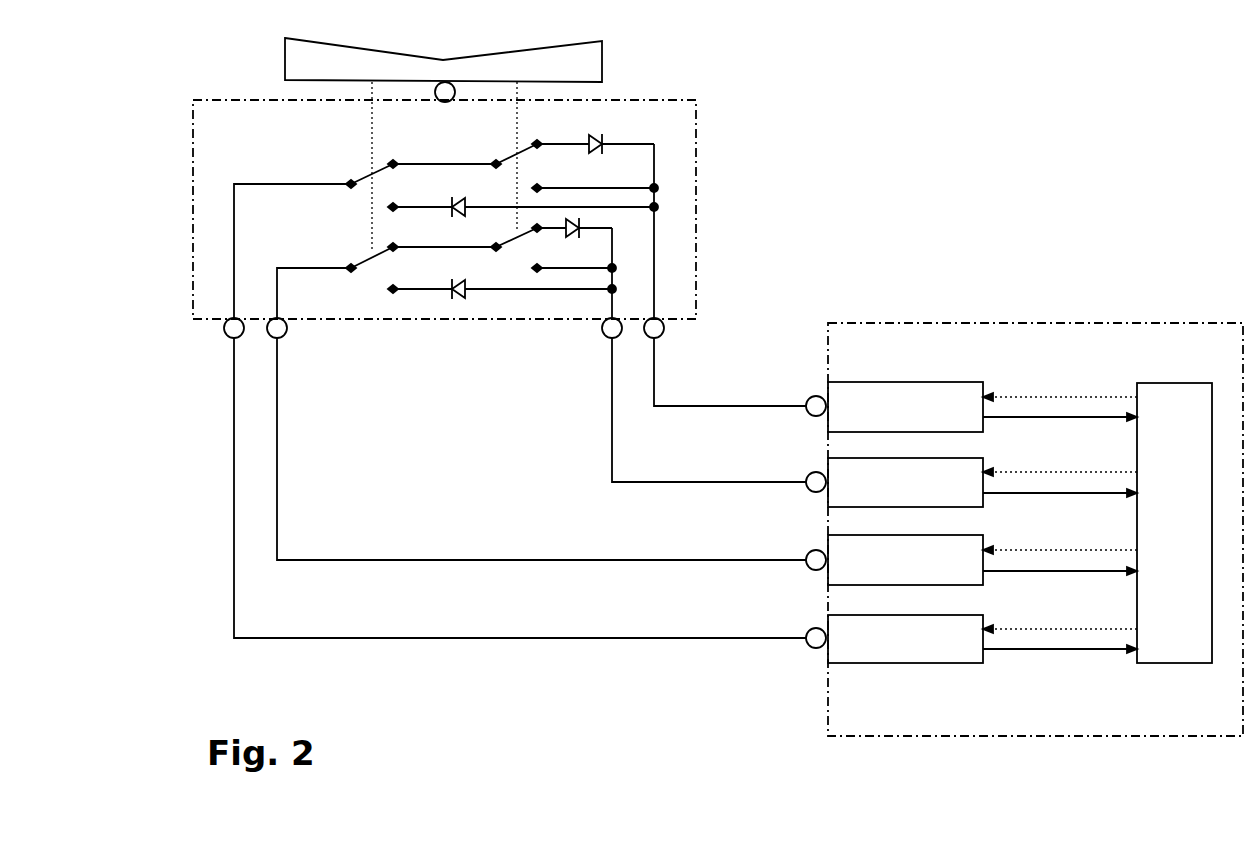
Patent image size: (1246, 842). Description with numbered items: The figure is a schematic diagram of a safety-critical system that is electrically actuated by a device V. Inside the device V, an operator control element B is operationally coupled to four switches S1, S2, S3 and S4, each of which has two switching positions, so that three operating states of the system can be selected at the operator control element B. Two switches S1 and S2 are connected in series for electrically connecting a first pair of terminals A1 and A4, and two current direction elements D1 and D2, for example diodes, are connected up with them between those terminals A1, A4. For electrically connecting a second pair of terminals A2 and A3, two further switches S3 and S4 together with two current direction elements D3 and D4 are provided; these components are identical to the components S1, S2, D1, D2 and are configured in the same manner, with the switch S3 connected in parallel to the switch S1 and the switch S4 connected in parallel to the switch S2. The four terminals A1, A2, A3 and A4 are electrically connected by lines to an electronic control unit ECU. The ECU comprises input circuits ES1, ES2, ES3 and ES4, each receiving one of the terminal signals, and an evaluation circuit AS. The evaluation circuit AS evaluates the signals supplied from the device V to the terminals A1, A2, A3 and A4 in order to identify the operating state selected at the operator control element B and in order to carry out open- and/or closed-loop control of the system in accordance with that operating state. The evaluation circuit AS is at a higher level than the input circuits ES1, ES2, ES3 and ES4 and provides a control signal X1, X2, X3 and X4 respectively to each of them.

The operator control element B is at (321, 71).
The device V is at (238, 141).
The switch S1 is at (525, 162).
The switch S2 is at (362, 170).
The switch S3 is at (504, 244).
The switch S4 is at (362, 253).
The current direction element D1 is at (595, 132).
The current direction element D2 is at (523, 195).
The current direction element D3 is at (574, 242).
The current direction element D4 is at (502, 277).
The terminal A1 is at (659, 435).
The terminal A2 is at (702, 437).
The terminal A3 is at (847, 379).
The terminal A4 is at (890, 299).
The input circuit ES1 is at (905, 639).
The input circuit ES2 is at (905, 560).
The input circuit ES3 is at (905, 482).
The input circuit ES4 is at (905, 407).
The control signal X1 is at (1060, 615).
The control signal X2 is at (1060, 535).
The control signal X3 is at (1060, 458).
The control signal X4 is at (1060, 383).
The evaluation circuit AS is at (1174, 523).
The electronic control unit ECU is at (1226, 727).